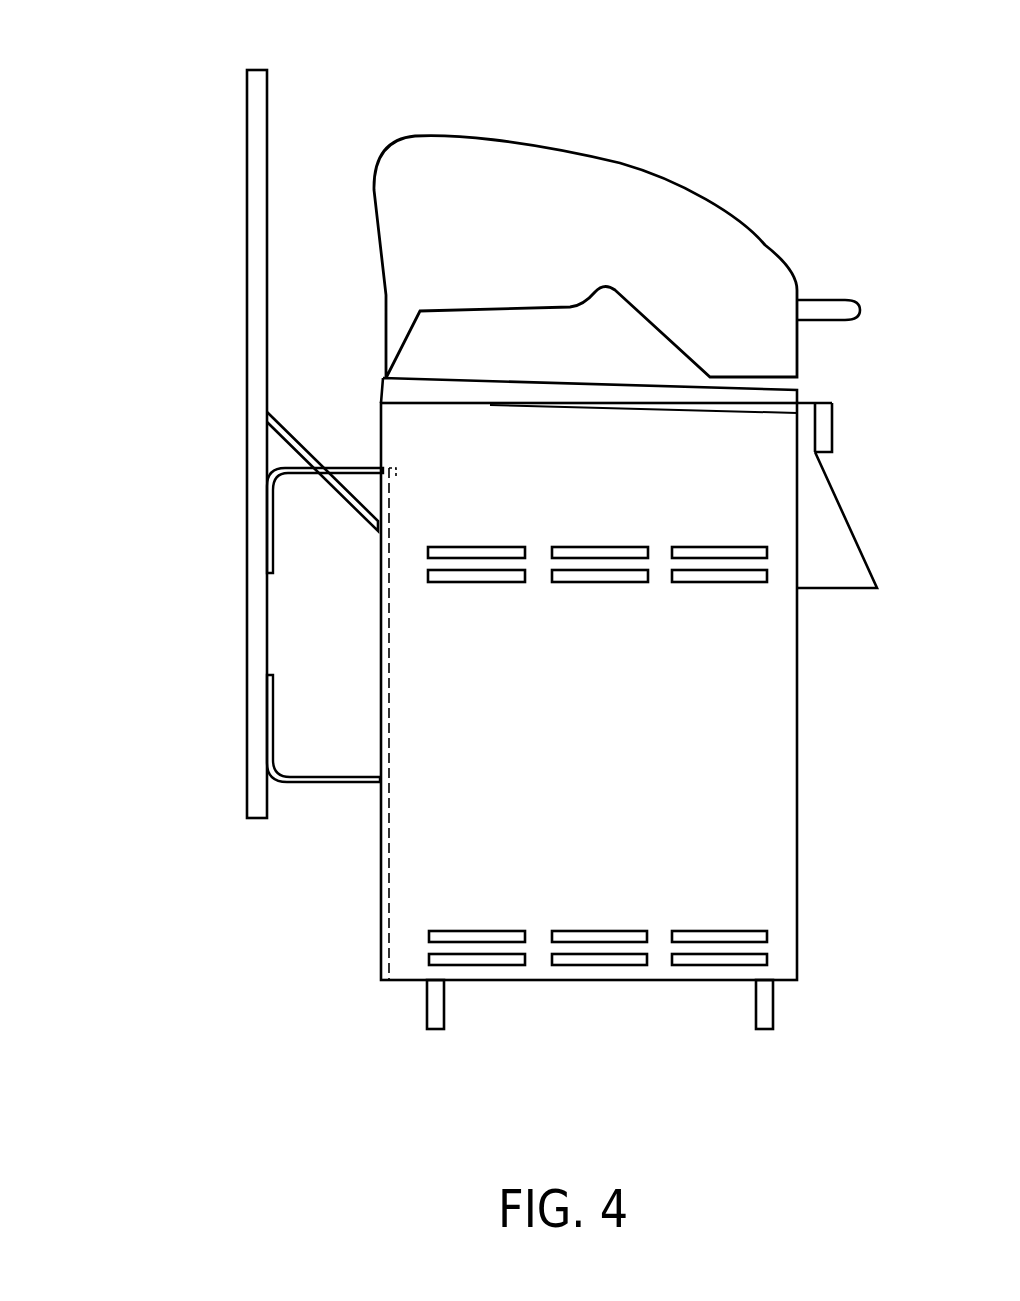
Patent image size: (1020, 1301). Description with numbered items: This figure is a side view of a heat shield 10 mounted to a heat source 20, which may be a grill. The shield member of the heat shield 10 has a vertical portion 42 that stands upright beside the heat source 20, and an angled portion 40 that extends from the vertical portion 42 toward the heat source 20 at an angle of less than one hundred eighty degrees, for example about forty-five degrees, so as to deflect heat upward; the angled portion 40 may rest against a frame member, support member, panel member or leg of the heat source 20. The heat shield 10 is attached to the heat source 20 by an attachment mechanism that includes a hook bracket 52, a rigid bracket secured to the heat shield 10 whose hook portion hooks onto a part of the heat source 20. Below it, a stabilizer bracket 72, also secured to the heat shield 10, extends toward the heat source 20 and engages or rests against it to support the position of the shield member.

The heat shield 10 is at (320, 131).
The heat source 20 is at (542, 236).
The angled portion 40 is at (280, 440).
The vertical portion 42 is at (258, 216).
The hook bracket 52 is at (281, 471).
The stabilizer bracket 72 is at (278, 768).